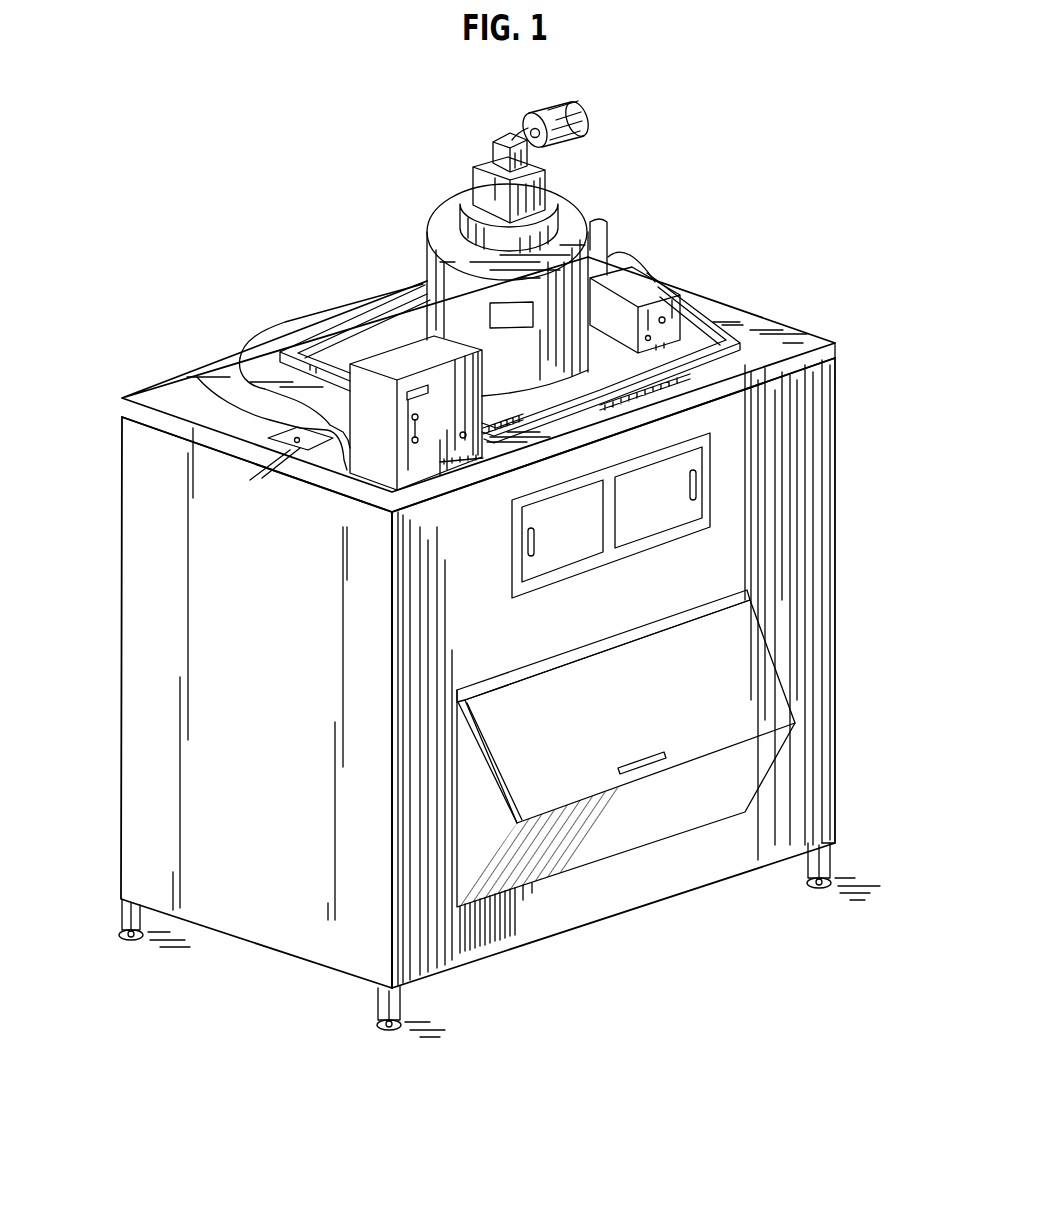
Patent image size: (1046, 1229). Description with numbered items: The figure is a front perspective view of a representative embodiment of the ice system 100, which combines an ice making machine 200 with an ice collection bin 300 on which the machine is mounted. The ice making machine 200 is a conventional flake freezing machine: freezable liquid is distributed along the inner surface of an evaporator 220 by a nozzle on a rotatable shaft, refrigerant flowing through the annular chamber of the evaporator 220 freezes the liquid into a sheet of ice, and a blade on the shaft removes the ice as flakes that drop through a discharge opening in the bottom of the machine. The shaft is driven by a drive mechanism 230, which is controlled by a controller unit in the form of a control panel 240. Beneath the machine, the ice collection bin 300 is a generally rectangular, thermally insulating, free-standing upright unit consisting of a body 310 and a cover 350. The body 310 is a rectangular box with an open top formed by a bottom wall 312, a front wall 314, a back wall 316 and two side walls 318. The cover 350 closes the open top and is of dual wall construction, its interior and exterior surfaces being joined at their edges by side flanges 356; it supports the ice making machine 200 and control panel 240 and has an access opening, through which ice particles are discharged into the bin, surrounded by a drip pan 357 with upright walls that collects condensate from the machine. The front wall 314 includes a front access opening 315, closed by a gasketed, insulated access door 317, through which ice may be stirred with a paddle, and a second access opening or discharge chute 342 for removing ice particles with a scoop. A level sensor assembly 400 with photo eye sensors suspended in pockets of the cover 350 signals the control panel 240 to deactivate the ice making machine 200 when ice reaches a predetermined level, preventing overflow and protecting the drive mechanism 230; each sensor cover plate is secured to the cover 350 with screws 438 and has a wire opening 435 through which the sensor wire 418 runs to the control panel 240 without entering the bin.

The ice system 100 is at (742, 140).
The ice making machine 200 is at (396, 200).
The evaporator 220 is at (578, 200).
The drive mechanism 230 is at (495, 147).
The control panel 240 is at (403, 357).
The ice collection bin 300 is at (843, 392).
The body 310 is at (806, 500).
The bottom wall 312 is at (600, 917).
The front wall 314 is at (815, 602).
The front access opening 315 is at (710, 477).
The back wall 316 is at (122, 663).
The access door 317 is at (680, 524).
The side walls 318 is at (148, 833).
The discharge chute 342 is at (770, 648).
The cover 350 is at (786, 318).
The side flanges 356 is at (838, 352).
The drip pan 357 is at (700, 327).
The level sensor assembly 400 is at (297, 440).
The wire 418 is at (283, 322).
The wire opening 435 is at (280, 432).
The screws 438 is at (197, 377).